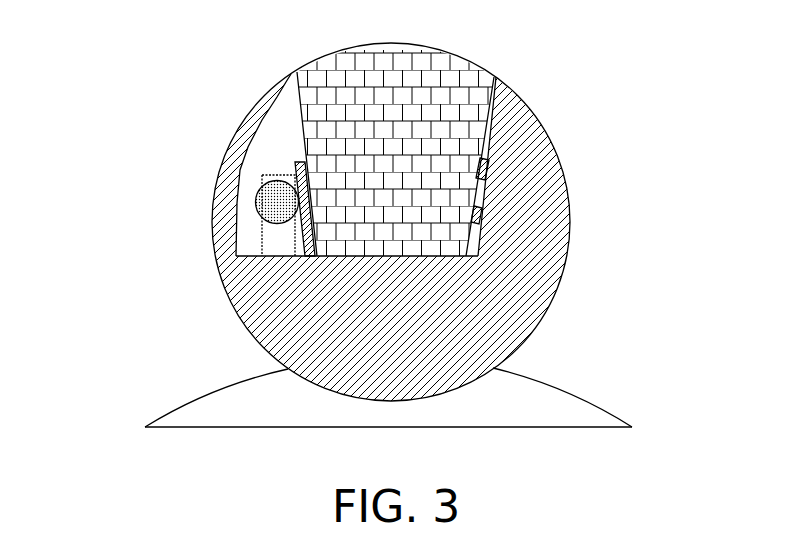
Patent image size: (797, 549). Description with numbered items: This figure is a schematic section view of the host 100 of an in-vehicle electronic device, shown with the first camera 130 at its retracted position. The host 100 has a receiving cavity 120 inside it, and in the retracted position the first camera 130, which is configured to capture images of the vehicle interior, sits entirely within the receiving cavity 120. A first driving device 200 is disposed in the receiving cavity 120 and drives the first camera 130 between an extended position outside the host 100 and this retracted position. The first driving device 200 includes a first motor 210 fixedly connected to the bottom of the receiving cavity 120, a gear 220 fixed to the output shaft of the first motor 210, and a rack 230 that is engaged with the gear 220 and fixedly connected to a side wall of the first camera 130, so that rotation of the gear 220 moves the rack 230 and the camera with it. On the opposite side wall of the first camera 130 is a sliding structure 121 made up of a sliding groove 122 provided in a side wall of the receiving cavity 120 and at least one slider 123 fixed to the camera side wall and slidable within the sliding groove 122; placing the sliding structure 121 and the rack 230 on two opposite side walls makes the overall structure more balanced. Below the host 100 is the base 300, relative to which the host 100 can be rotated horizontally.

The host 100 is at (452, 298).
The receiving cavity 120 is at (280, 147).
The sliding structure 121 is at (687, 132).
The sliding groove 122 is at (490, 112).
The slider 123 is at (478, 203).
The first camera 130 is at (367, 100).
The first driving device 200 is at (100, 253).
The first motor 210 is at (277, 238).
The gear 220 is at (255, 193).
The rack 230 is at (292, 167).
The base 300 is at (263, 403).